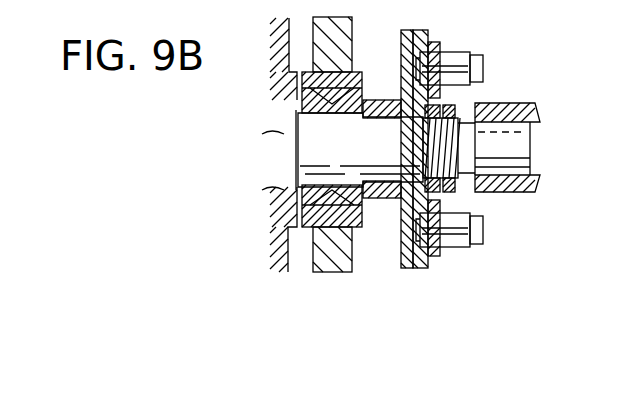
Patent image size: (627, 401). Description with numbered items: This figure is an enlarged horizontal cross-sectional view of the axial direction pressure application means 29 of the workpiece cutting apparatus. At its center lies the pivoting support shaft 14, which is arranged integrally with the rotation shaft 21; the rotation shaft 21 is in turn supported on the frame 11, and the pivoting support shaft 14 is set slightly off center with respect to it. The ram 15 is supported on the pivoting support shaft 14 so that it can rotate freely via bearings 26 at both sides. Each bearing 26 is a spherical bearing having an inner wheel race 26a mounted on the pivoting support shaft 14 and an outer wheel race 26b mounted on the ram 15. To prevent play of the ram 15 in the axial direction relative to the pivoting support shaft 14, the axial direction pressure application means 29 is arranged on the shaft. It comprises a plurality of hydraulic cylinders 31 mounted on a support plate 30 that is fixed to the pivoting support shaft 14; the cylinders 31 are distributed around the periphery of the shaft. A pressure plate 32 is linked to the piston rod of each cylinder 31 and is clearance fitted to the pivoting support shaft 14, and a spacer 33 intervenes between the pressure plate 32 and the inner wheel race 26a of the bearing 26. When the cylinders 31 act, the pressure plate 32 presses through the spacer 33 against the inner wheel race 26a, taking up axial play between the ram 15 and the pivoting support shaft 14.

The frame 11 is at (289, 250).
The pivoting support shaft 14 is at (522, 150).
The ram 15 is at (352, 250).
The rotation shaft 21 is at (297, 134).
The bearing 26 is at (200, 180).
The inner wheel race 26a is at (315, 196).
The outer wheel race 26b is at (298, 214).
The axial direction pressure application means 29 is at (528, 0).
The support plate 30 is at (420, 30).
The hydraulic cylinder 31 is at (445, 50).
The pressure plate 32 is at (403, 250).
The spacer 33 is at (384, 100).